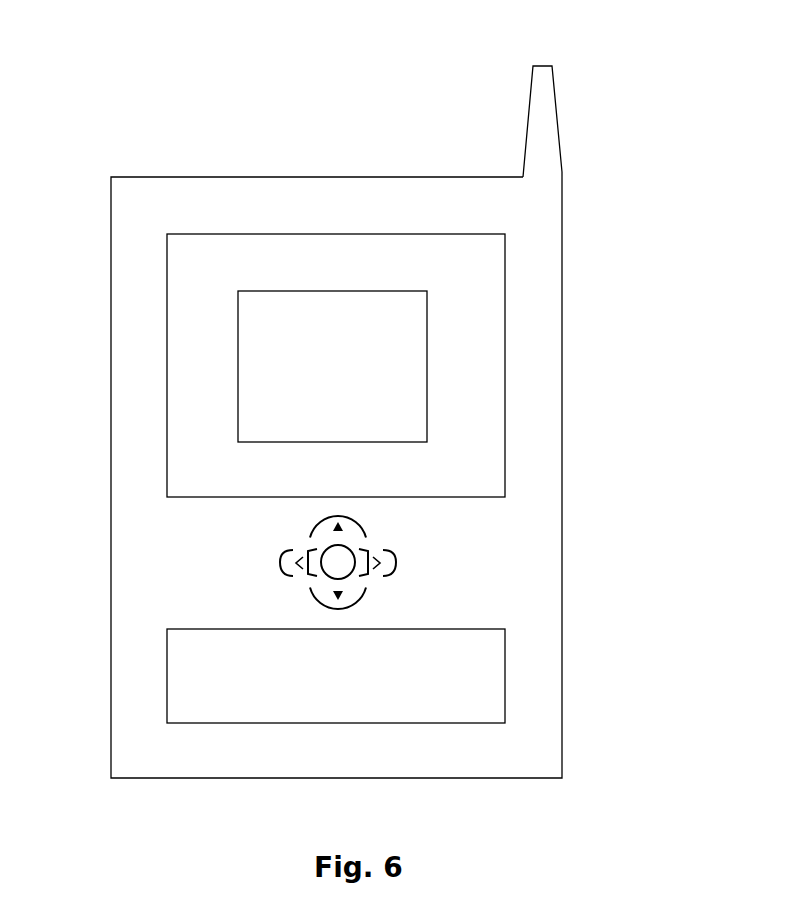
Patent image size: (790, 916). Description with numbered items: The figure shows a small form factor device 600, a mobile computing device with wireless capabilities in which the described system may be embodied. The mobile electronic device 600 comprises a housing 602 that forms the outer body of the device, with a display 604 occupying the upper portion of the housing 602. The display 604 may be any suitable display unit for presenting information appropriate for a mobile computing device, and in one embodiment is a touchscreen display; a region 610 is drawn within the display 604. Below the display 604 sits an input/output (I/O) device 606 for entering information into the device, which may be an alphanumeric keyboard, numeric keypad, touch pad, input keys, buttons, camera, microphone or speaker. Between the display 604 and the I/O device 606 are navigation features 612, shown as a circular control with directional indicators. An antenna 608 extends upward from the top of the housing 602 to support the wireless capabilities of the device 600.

The small form factor device 600 is at (124, 76).
The housing 602 is at (562, 478).
The display 604 is at (505, 252).
The input/output (I/O) device 606 is at (506, 665).
The antenna 608 is at (528, 113).
The display region 610 is at (427, 389).
The navigation features 612 is at (414, 548).